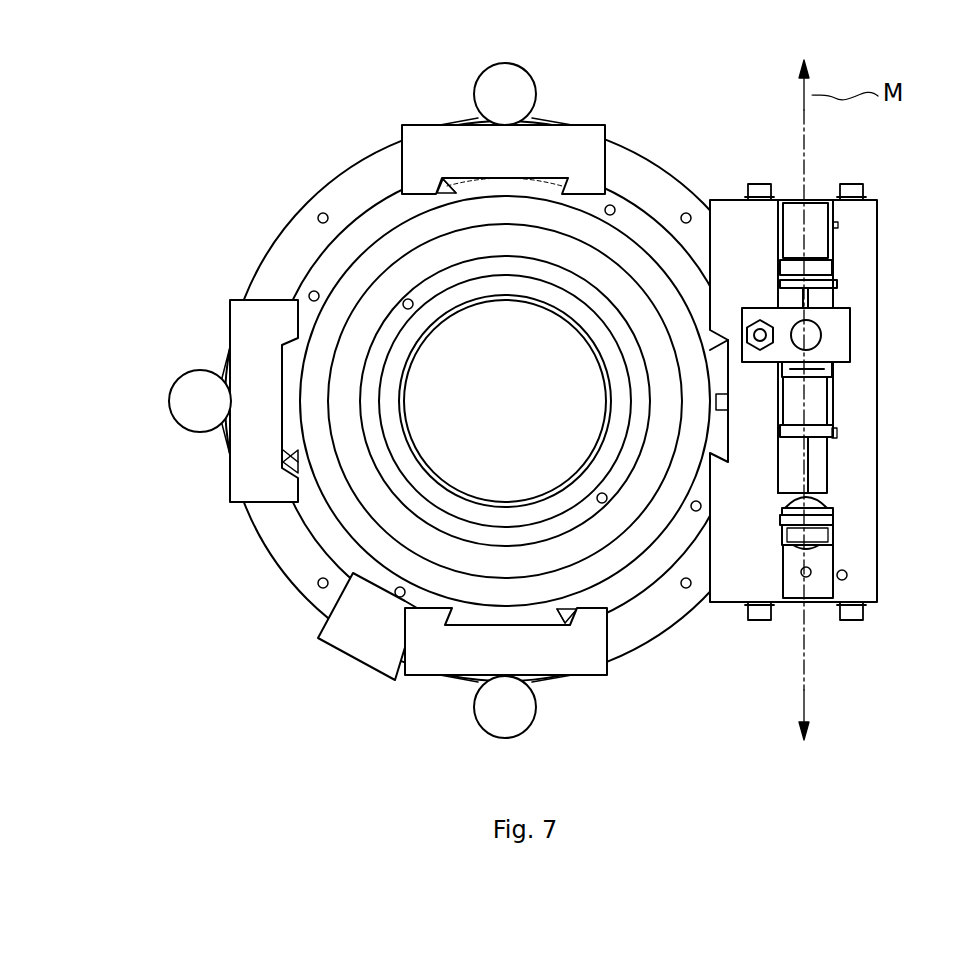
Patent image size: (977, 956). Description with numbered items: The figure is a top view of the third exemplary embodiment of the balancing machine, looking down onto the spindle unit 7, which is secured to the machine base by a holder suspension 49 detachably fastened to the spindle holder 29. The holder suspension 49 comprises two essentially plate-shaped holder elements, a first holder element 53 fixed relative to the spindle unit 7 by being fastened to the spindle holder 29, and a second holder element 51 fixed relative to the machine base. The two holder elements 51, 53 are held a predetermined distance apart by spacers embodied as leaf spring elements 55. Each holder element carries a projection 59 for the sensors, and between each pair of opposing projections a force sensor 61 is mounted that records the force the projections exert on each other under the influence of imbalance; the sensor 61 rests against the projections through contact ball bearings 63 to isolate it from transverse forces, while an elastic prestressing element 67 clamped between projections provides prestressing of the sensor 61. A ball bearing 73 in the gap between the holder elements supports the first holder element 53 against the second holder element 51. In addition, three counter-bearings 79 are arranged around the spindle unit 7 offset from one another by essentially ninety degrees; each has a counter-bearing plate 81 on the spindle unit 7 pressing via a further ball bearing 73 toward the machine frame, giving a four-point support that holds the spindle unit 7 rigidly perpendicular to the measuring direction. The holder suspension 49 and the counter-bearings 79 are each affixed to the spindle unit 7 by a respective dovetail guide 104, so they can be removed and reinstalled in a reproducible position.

The spindle unit 7 is at (195, 192).
The spindle holder 29 is at (322, 253).
The holder suspension 49 is at (905, 545).
The second holder element 51 is at (856, 243).
The first holder element 53 is at (728, 217).
The leaf spring elements 55 is at (818, 193).
The projection 59 is at (820, 408).
The sensor 61 is at (820, 392).
The contact ball bearings 63 is at (847, 352).
The elastic prestressing element 67 is at (825, 500).
The ball bearing 73 is at (513, 84).
The counter-bearing 79 is at (430, 98).
The counter-bearing plate 81 is at (594, 138).
The dovetail guide 104 is at (445, 183).